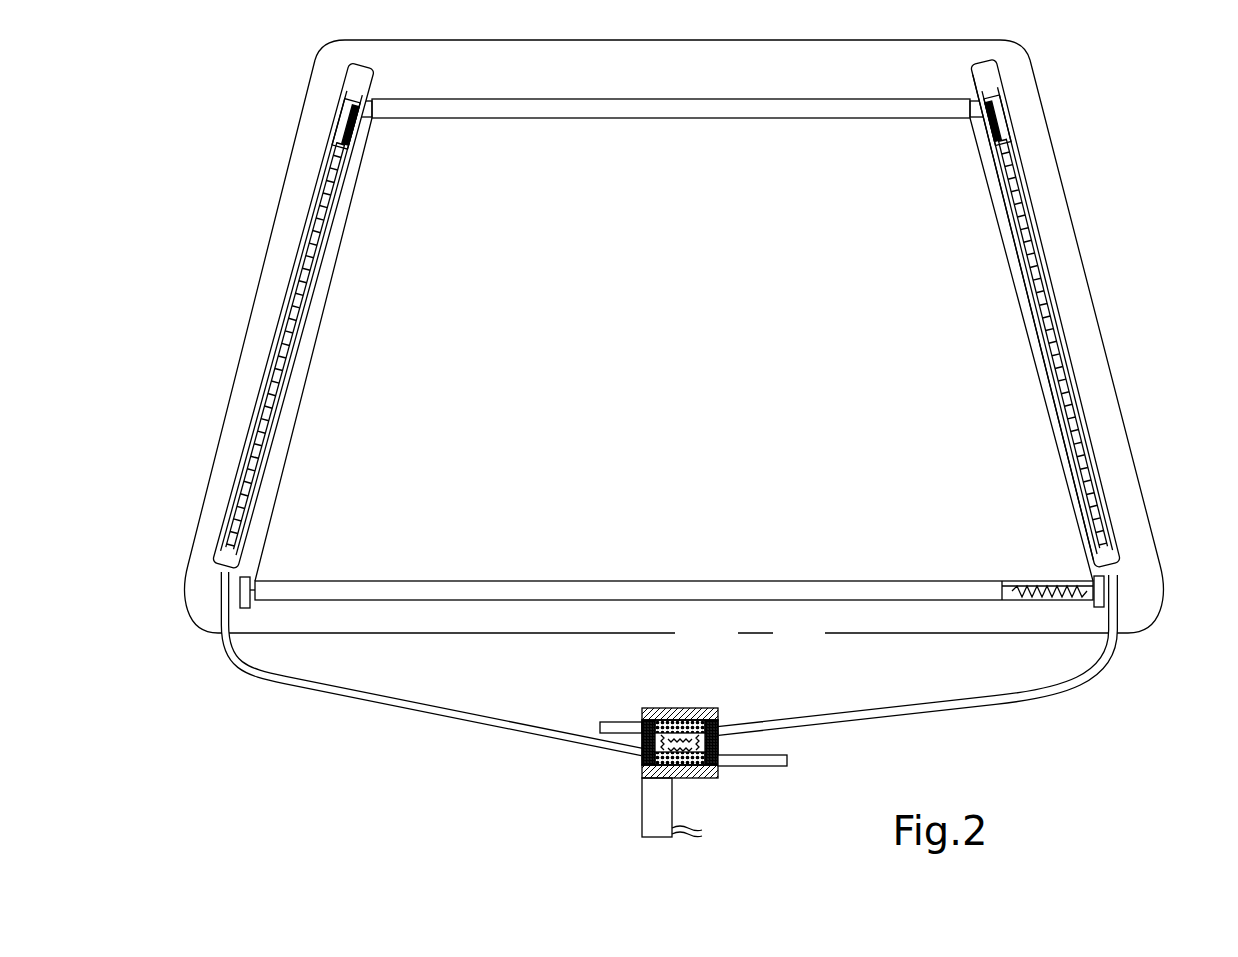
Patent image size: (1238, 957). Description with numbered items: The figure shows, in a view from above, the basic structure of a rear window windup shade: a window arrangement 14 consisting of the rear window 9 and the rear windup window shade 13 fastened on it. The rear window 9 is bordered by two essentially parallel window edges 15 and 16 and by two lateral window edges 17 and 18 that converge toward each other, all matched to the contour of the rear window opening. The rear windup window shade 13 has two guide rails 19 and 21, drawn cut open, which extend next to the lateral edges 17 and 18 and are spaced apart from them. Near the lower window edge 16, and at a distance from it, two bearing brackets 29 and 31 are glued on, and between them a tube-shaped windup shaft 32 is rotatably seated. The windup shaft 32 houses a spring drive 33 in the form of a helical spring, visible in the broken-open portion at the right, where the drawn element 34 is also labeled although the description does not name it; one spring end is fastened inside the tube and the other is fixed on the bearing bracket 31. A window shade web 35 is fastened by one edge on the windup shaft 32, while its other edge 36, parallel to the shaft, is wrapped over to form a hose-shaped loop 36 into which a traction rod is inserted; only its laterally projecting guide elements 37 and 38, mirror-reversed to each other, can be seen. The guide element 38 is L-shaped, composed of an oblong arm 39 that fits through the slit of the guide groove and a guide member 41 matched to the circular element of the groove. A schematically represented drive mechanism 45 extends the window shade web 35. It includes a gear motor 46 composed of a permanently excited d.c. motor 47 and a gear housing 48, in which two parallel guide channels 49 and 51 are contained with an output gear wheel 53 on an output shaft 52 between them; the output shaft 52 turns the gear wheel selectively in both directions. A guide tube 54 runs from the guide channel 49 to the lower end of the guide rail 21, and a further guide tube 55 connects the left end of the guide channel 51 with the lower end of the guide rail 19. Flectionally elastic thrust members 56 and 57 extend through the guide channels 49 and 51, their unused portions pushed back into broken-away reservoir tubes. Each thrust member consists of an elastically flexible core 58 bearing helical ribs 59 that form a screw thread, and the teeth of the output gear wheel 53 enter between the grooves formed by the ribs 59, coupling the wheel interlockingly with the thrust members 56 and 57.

The rear window 9 is at (661, 351).
The rear windup window shade 13 is at (1051, 241).
The window arrangement 14 is at (663, 427).
The window edge 15 is at (622, 40).
The lower window edge 16 is at (490, 634).
The lateral window edge 17 is at (219, 440).
The lateral window edge 18 is at (1130, 430).
The guide rail 19 is at (322, 252).
The guide rail 21 is at (1077, 369).
The bearing bracket 29 is at (247, 606).
The bearing bracket 31 is at (1096, 605).
The windup shaft 32 is at (575, 578).
The spring drive 33 is at (1040, 585).
The adjusting element 34 is at (1010, 600).
The window shade web 35 is at (767, 327).
The edge (hose-shaped loop) 36 is at (690, 105).
The guide element 37 is at (1030, 75).
The guide element 38 is at (310, 96).
The oblong arm 39 is at (372, 100).
The guide member 41 is at (340, 130).
The drive mechanism 45 is at (687, 734).
The gear motor 46 is at (632, 770).
The d.c. motor 47 is at (645, 779).
The gear housing 48 is at (720, 771).
The guide channel 49 is at (690, 745).
The guide channel 51 is at (690, 779).
The output shaft 52 is at (648, 710).
The output gear wheel 53 is at (720, 756).
The guide tube 54 is at (965, 705).
The guide tube 55 is at (388, 705).
The thrust member 56 is at (305, 300).
The thrust member 57 is at (1050, 388).
The core 58 is at (1047, 294).
The ribs 59 is at (1055, 328).